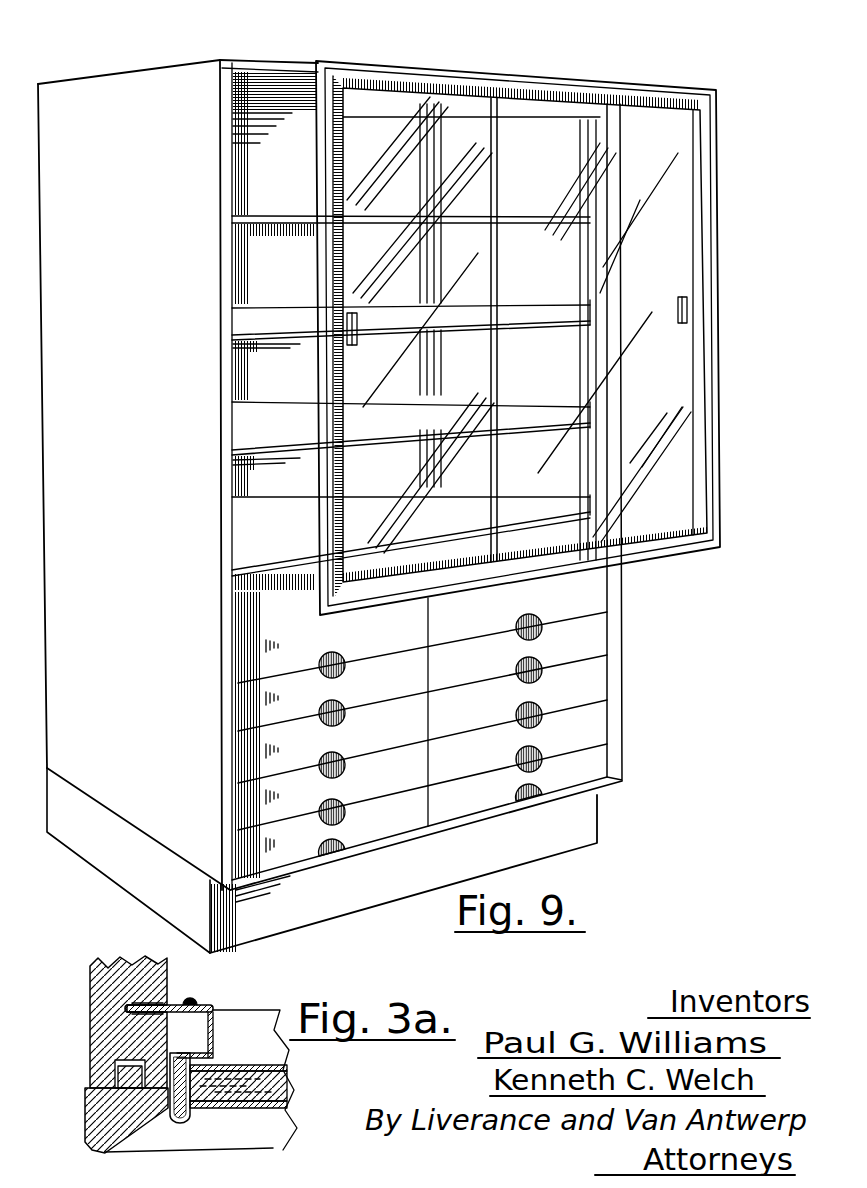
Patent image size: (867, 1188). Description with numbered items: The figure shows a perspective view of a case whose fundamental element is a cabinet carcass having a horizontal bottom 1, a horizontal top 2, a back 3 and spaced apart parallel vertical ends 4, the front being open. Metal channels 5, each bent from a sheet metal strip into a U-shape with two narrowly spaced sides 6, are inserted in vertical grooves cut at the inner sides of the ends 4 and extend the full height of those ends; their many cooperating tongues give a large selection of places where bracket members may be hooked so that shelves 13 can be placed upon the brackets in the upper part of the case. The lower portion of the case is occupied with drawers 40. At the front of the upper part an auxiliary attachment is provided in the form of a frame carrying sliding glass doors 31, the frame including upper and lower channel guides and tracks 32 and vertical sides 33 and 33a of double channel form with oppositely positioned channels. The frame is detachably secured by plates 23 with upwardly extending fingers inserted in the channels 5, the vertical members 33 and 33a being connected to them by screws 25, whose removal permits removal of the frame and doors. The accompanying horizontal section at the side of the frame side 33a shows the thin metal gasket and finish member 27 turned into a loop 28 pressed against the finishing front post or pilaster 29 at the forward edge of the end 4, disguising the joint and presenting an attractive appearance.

In FIG. 9, the horizontal bottom 1 is at (407, 840).
In FIG. 9, the horizontal top 2 is at (280, 72).
In FIG. 9, the back 3 is at (278, 155).
In FIG. 9, the vertical ends 4 is at (165, 78).
In FIG. 3A, the vertical ends 4 is at (100, 985).
In FIG. 3A, the metal channels 5 is at (128, 1008).
In FIG. 3A, the channel sides 6 is at (135, 1005).
In FIG. 9, the shelves 13 is at (287, 226).
In FIG. 3A, the plates 23 is at (172, 1006).
In FIG. 3A, the screws 25 is at (193, 1000).
In FIG. 3A, the thin metal gasket and finish member 27 is at (175, 1080).
In FIG. 9, the finishing loop 28 is at (332, 517).
In FIG. 3A, the finishing loop 28 is at (185, 1123).
In FIG. 3A, the finishing front post or cornice 29 is at (110, 1115).
In FIG. 9, the sliding glass doors 31 is at (348, 162).
In FIG. 3A, the sliding glass doors 31 is at (280, 1093).
In FIG. 9, the upper and lower channel guides and tracks 32 is at (556, 88).
In FIG. 9, the vertical side 33 is at (335, 270).
In FIG. 9, the opposite vertical side 33a is at (708, 343).
In FIG. 3A, the opposite vertical side 33a is at (212, 1058).
In FIG. 9, the drawers 40 is at (253, 747).